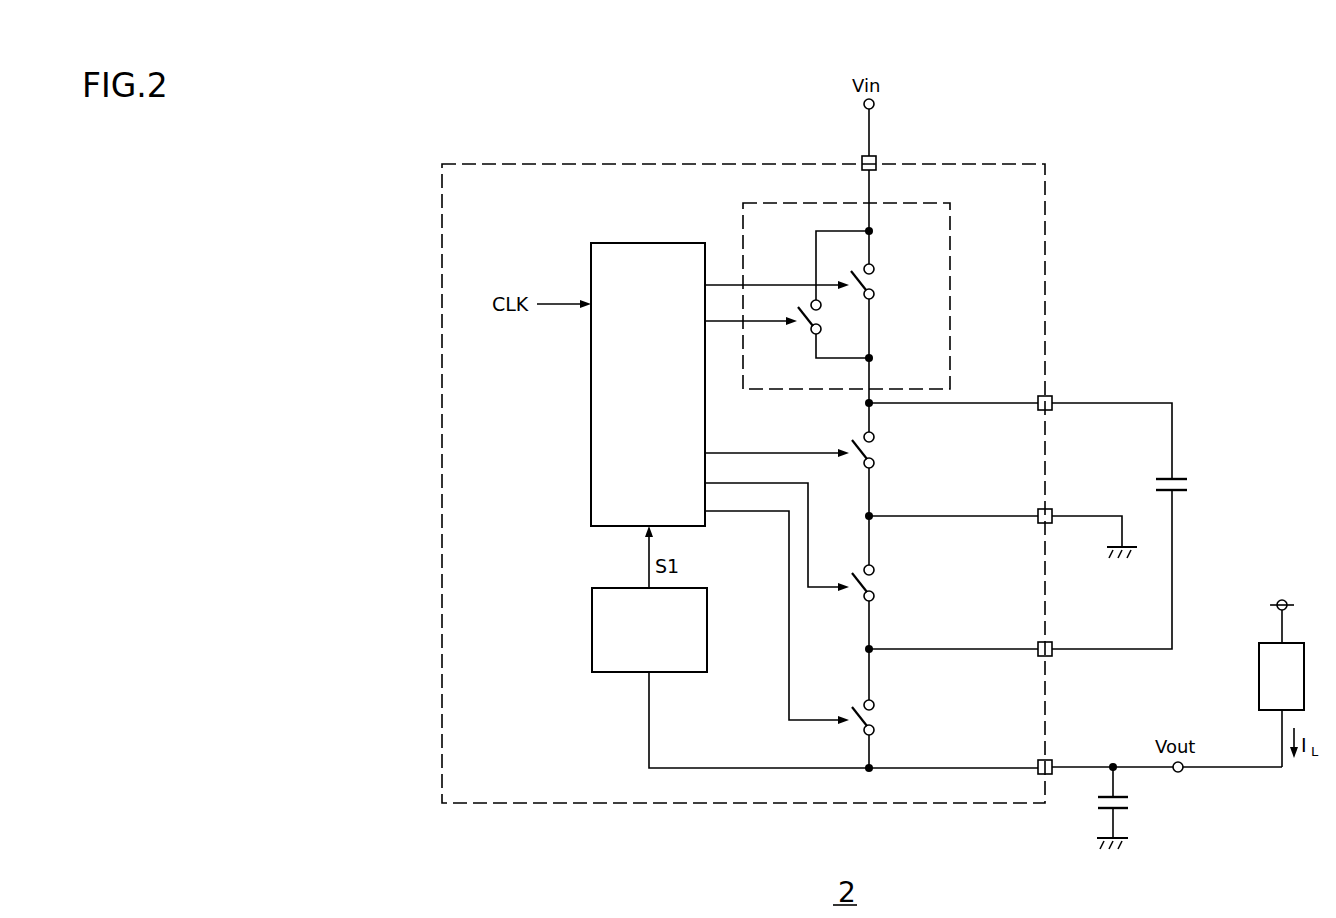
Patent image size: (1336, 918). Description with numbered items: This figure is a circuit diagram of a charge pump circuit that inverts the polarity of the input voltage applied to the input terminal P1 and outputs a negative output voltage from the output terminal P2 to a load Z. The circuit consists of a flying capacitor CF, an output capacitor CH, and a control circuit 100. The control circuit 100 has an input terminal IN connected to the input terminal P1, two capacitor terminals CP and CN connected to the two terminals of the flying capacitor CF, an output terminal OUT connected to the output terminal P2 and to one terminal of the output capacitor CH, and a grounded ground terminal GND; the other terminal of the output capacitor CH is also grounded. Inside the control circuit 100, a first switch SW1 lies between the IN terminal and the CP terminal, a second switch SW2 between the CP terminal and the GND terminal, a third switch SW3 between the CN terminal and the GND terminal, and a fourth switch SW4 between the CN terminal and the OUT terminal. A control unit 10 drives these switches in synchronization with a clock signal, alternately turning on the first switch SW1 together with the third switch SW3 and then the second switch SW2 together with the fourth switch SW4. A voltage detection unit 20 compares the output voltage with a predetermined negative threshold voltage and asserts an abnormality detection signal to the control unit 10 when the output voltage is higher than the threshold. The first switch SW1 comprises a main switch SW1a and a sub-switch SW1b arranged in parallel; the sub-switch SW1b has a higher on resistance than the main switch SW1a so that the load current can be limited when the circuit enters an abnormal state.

The control circuit 100 is at (673, 804).
The control unit 10 is at (591, 441).
The voltage detection unit 20 is at (592, 636).
The input terminal P1 is at (875, 103).
The output terminal P2 is at (1183, 771).
The input terminal of control circuit IN is at (877, 159).
The capacitor terminal CP is at (1050, 395).
The ground terminal GND is at (1050, 508).
The capacitor terminal CN is at (1050, 641).
The output terminal of control circuit OUT is at (1050, 759).
The first switch SW1 is at (952, 285).
The main switch SW1a is at (876, 283).
The sub-switch SW1b is at (802, 329).
The second switch SW2 is at (881, 451).
The third switch SW3 is at (881, 585).
The fourth switch SW4 is at (881, 719).
The flying capacitor CF is at (1190, 485).
The output capacitor CH is at (1130, 803).
The load Z is at (1281, 683).